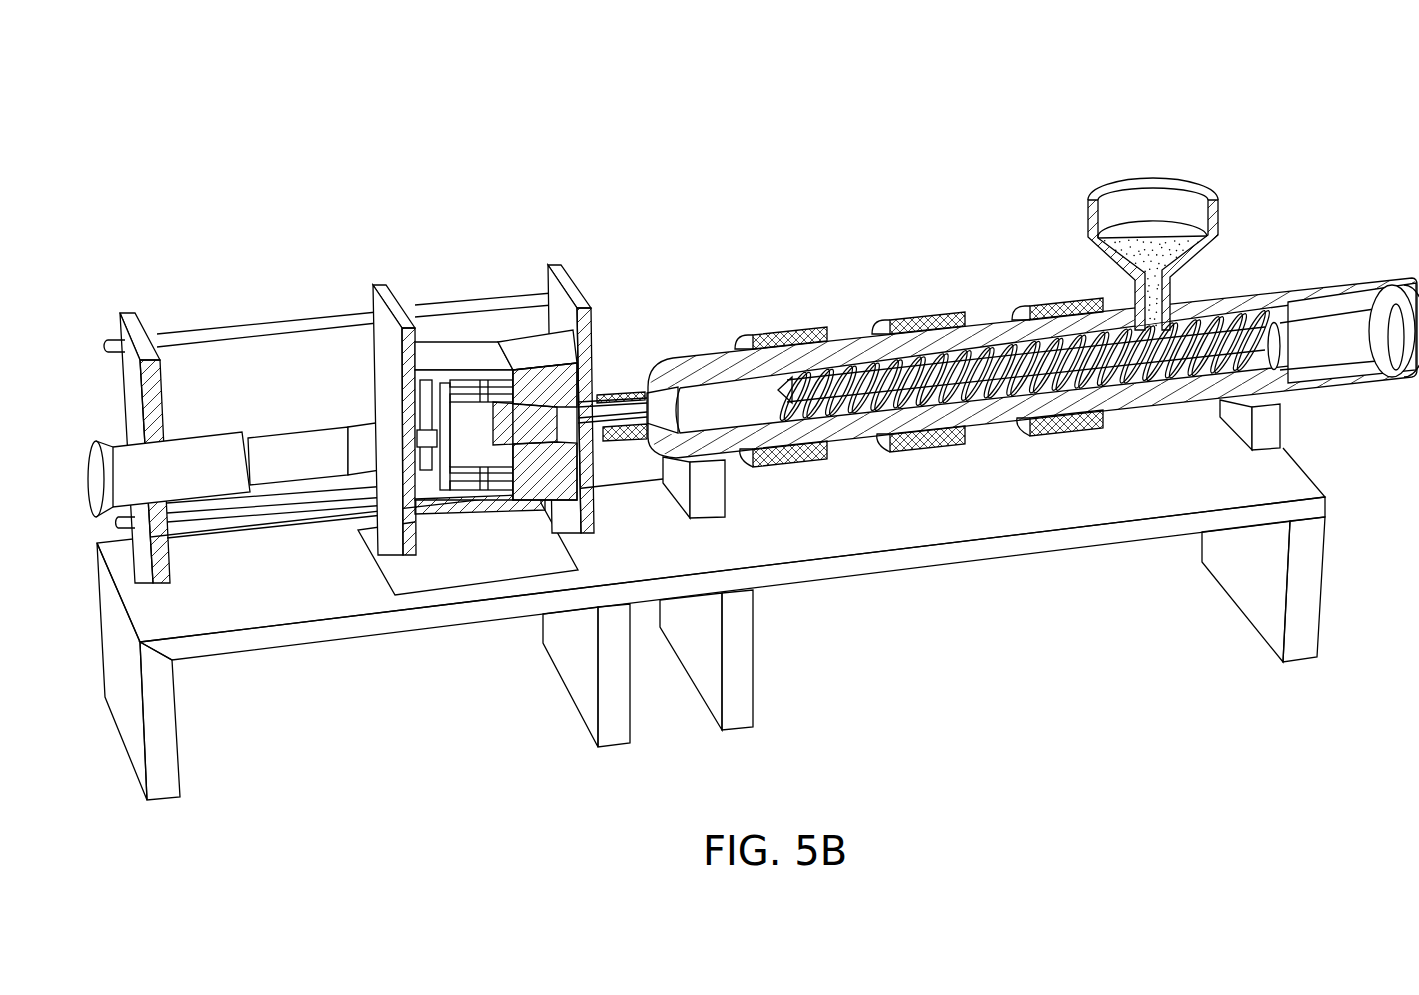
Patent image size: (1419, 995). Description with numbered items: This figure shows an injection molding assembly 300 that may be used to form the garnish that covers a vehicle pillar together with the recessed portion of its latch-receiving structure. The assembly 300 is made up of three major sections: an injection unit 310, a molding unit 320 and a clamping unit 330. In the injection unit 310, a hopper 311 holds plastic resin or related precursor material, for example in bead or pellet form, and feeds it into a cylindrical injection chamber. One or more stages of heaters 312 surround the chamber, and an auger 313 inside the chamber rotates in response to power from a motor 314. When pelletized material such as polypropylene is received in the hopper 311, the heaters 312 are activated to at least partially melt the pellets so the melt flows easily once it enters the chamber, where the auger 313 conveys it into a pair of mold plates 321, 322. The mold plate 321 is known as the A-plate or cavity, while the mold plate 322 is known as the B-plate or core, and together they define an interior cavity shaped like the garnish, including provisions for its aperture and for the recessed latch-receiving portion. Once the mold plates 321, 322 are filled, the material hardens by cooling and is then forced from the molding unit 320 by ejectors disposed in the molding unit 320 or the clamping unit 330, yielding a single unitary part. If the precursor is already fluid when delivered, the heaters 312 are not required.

The injection molding assembly 300 is at (711, 414).
The injection unit 310 is at (998, 301).
The hopper 311 is at (1148, 178).
The heaters 312 is at (783, 335).
The auger 313 is at (1142, 378).
The motor 314 is at (1337, 327).
The molding unit 320 is at (504, 352).
The mold plate 321 is at (548, 350).
The mold plate 322 is at (463, 356).
The clamping unit 330 is at (244, 388).